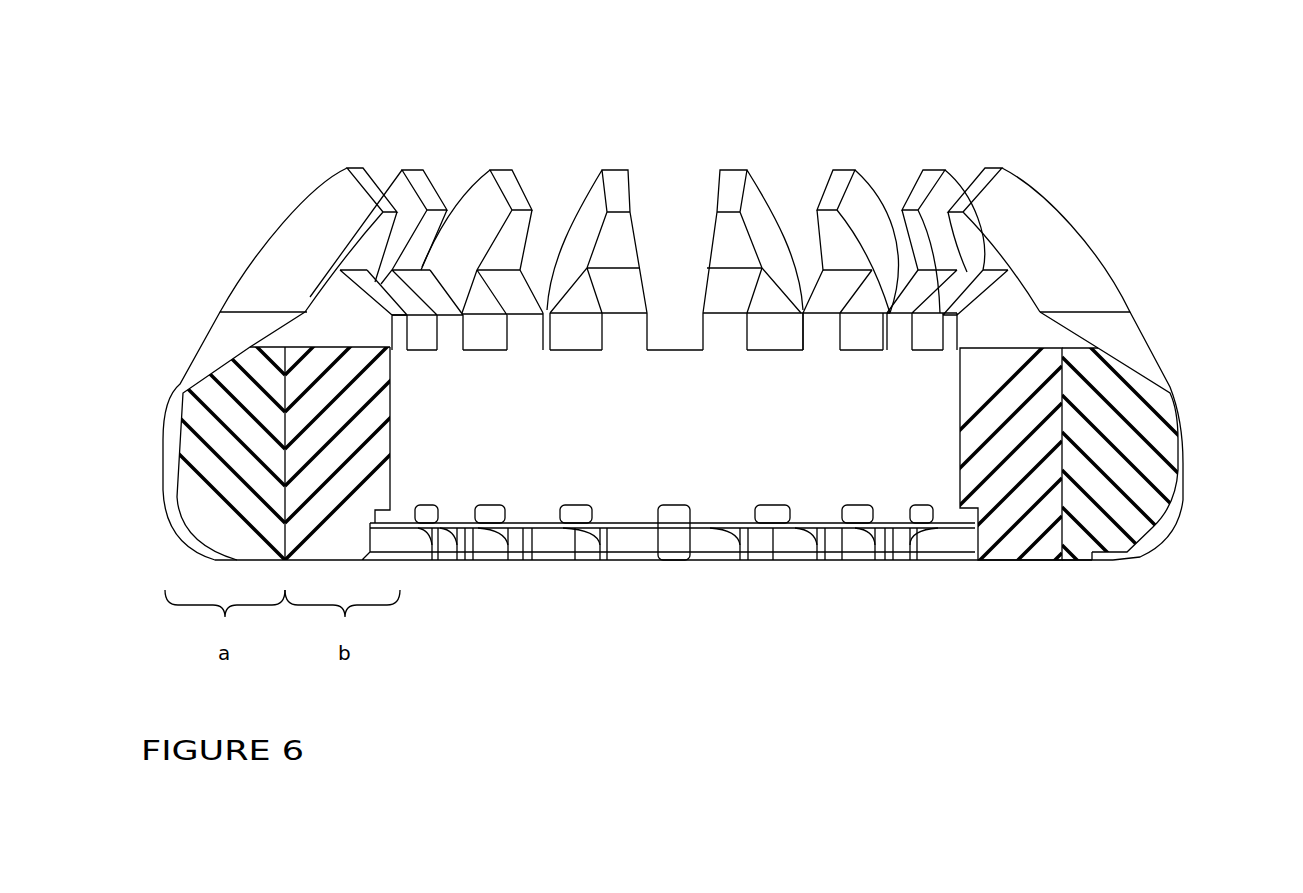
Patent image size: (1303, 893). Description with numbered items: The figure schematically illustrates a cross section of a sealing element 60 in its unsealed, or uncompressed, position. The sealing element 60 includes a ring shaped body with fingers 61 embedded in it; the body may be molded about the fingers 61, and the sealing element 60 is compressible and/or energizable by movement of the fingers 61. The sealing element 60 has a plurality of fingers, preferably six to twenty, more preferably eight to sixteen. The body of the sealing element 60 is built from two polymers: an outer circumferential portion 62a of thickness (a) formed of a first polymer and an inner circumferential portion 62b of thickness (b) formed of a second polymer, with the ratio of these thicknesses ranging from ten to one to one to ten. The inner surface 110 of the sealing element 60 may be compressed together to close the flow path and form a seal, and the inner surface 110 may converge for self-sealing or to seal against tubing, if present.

The sealing element 60 is at (673, 393).
The fingers 61 is at (1025, 213).
The outer circumferential portion 62a is at (1137, 426).
The inner circumferential portion 62b is at (1035, 530).
The inner surface 110 is at (628, 503).